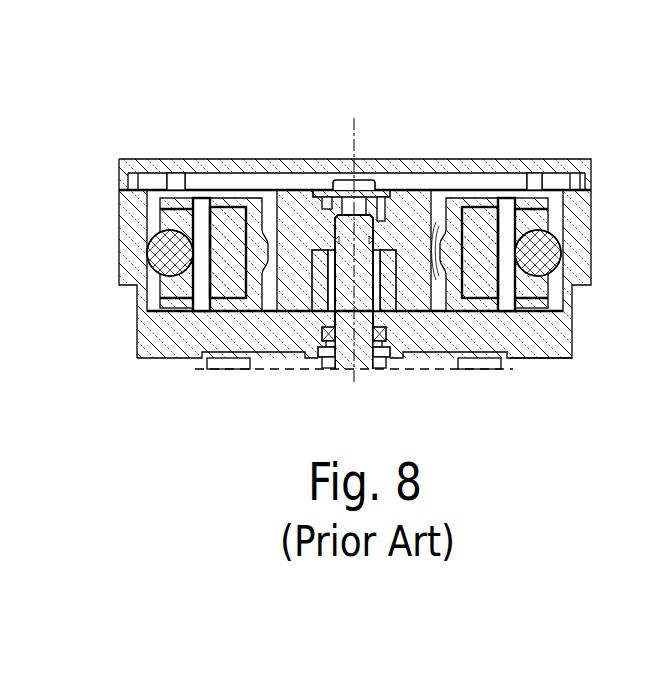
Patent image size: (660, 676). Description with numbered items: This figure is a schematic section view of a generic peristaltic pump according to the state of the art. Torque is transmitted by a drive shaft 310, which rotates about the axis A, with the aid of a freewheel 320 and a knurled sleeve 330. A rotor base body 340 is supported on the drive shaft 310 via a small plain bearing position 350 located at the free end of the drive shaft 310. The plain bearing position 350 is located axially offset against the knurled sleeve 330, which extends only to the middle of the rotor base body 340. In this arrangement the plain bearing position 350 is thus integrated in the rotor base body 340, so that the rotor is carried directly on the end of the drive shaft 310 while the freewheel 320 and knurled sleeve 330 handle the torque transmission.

The drive shaft 310 is at (357, 297).
The freewheel 320 is at (320, 218).
The knurled sleeve 330 is at (320, 270).
The rotor base body 340 is at (413, 227).
The plain bearing position 350 is at (350, 213).
The axis A is at (358, 138).